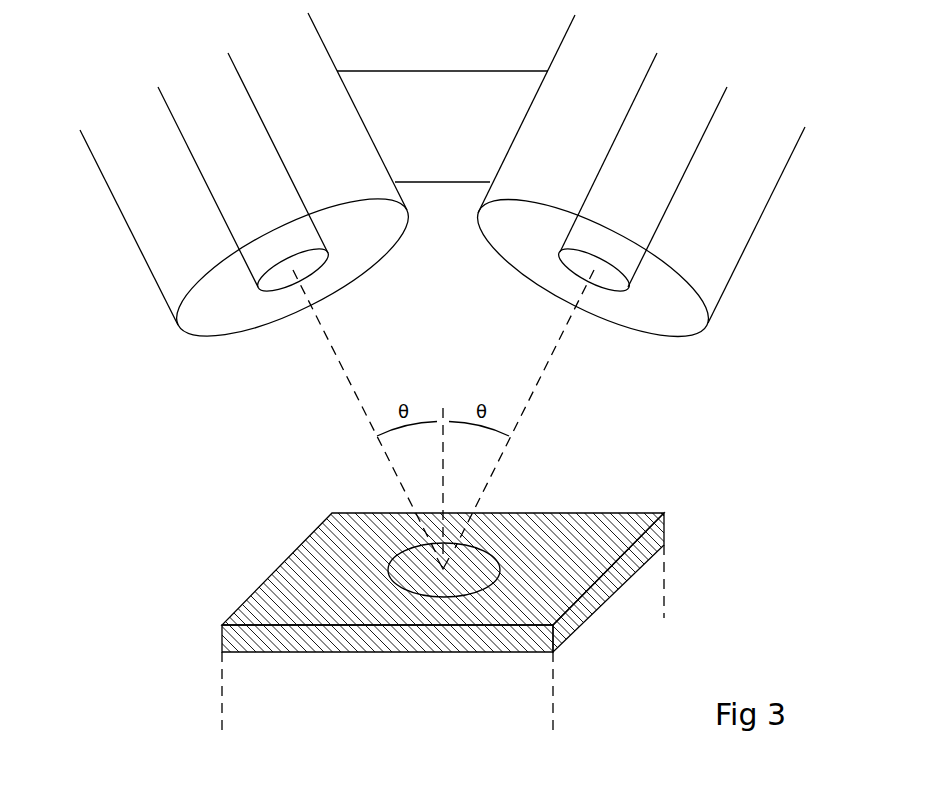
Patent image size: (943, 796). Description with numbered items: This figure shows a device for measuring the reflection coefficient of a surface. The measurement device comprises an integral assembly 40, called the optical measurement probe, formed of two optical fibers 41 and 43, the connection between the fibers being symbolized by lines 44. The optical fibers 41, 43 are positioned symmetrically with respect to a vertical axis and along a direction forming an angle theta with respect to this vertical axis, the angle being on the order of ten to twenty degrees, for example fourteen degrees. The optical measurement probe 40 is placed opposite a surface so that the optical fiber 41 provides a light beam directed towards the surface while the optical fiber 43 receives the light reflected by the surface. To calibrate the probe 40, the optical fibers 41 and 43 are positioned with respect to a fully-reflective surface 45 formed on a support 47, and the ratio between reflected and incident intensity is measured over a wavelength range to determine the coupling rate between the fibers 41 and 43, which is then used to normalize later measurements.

The integral assembly 40 is at (150, 302).
The optical fiber 41 is at (142, 217).
The optical fiber 43 is at (715, 242).
The lines 44 is at (428, 70).
The fully-reflective surface 45 is at (292, 583).
The support 47 is at (252, 688).